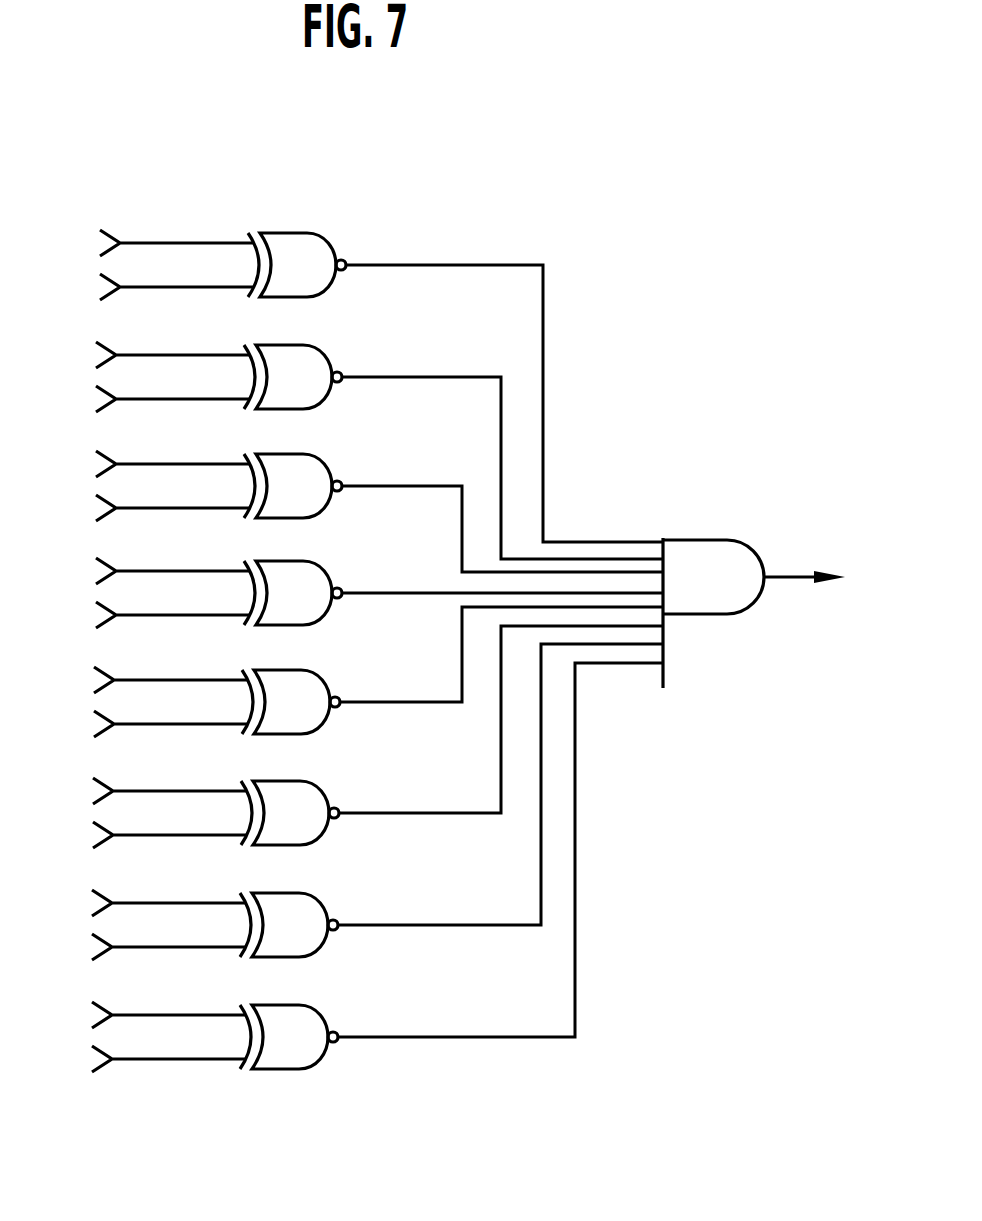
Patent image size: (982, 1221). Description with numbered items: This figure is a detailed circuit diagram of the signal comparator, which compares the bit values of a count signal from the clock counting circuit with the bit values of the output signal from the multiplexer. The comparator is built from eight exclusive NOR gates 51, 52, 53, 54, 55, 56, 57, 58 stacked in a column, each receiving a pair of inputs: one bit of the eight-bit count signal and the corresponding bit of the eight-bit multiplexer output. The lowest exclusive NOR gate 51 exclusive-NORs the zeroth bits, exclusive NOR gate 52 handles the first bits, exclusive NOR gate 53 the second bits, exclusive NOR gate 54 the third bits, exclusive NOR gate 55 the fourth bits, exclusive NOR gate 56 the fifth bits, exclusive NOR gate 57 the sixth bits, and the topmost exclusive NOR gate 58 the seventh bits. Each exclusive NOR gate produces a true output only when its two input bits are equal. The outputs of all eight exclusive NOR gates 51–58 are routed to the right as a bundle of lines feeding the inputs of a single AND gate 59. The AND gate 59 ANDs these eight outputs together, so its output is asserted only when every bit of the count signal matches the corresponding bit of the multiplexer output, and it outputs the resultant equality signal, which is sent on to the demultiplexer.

The exclusive NOR gate 51 is at (310, 1023).
The exclusive NOR gate 52 is at (310, 911).
The exclusive NOR gate 53 is at (311, 799).
The exclusive NOR gate 54 is at (312, 688).
The exclusive NOR gate 55 is at (314, 579).
The exclusive NOR gate 56 is at (314, 472).
The exclusive NOR gate 57 is at (314, 363).
The exclusive NOR gate 58 is at (316, 241).
The AND gate 59 is at (722, 547).